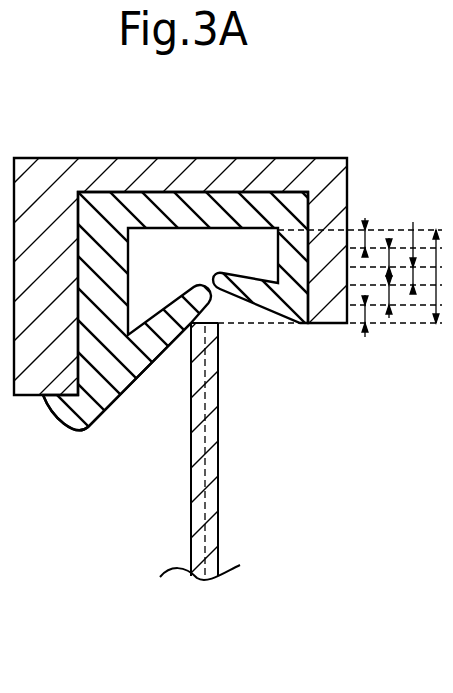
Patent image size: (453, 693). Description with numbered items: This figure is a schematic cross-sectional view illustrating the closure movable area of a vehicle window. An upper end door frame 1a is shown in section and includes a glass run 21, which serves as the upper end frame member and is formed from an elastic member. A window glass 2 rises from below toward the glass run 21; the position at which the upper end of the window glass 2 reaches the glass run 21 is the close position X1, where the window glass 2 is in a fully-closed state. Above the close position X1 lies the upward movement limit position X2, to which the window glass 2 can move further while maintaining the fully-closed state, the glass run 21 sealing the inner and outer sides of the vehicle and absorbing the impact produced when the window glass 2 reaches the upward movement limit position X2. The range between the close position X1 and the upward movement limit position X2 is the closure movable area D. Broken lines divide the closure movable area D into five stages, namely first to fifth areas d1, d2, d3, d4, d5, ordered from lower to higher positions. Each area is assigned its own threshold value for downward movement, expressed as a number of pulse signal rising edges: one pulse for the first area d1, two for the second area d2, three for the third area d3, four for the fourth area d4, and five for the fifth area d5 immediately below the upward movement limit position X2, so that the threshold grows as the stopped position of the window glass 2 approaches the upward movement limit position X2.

The upper end door frame 1a is at (186, 166).
The window glass 2 is at (218, 421).
The glass run 21 is at (138, 393).
The first area d1 is at (365, 337).
The second area d2 is at (389, 318).
The third area d3 is at (413, 228).
The fourth area d4 is at (389, 238).
The fifth area d5 is at (365, 218).
The closure movable area D is at (437, 324).
The close position X1 is at (427, 324).
The upward movement limit position X2 is at (426, 230).